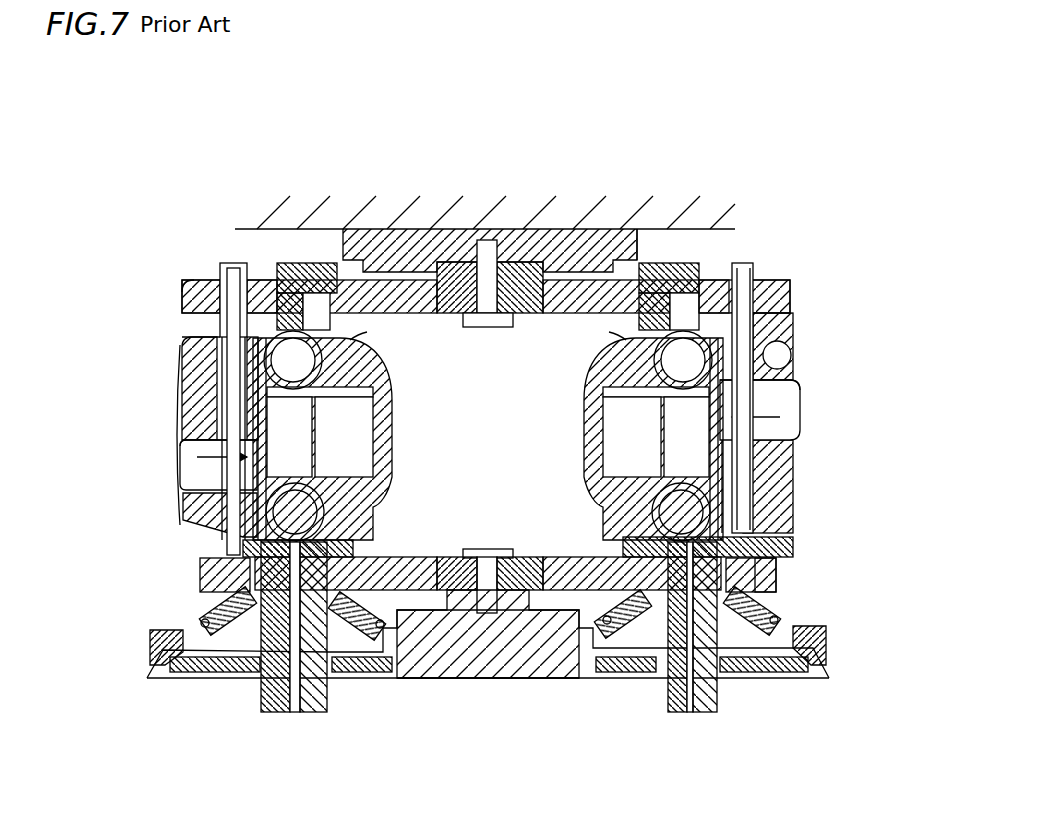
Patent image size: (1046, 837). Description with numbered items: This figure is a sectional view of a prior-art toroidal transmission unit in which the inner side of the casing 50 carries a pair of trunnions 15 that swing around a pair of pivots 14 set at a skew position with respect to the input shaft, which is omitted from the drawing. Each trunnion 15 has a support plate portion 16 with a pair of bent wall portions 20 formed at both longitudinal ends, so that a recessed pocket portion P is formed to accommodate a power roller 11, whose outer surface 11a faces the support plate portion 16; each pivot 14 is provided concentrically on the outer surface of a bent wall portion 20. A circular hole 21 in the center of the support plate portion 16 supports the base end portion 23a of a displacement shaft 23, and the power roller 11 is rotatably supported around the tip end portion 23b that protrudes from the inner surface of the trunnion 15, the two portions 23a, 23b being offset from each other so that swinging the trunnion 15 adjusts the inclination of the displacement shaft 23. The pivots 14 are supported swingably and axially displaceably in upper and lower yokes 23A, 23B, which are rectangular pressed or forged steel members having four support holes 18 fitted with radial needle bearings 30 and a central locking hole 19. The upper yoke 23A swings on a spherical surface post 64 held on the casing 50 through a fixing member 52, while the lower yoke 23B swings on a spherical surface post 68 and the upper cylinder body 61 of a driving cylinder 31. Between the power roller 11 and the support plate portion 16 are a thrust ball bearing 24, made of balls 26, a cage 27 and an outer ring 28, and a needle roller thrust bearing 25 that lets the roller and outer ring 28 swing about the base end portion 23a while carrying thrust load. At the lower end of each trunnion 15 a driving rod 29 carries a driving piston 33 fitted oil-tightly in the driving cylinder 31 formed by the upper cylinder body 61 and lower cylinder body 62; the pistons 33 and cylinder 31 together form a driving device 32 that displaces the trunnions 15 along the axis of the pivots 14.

The power roller 11 is at (366, 377).
The rotor top surface 11a is at (372, 354).
The pivot 14 is at (222, 262).
The trunnion 15 is at (200, 388).
The support plate portion 16 is at (212, 372).
The support hole 18 is at (327, 313).
The locking hole 19 is at (510, 232).
The bent wall portion 20 is at (307, 262).
The circular hole 21 is at (188, 443).
The displacement shaft 23 is at (185, 452).
The base end portion 23a is at (205, 478).
The tip end portion 23b is at (380, 410).
The yoke 23A is at (193, 283).
The yoke 23B is at (778, 578).
The thrust ball bearing 24 is at (180, 300).
The needle roller thrust bearing 25 is at (218, 525).
The ball 26 is at (228, 352).
The cage 27 is at (284, 262).
The outer ring 28 is at (208, 335).
The driving rod 29 is at (280, 710).
The radial needle bearing 30 is at (207, 270).
The driving cylinder 31 is at (514, 704).
The driving device 32 is at (340, 697).
The driving piston 33 is at (200, 680).
The casing 50 is at (632, 225).
The fixing member 52 is at (562, 330).
The upper cylinder body 61 is at (488, 688).
The lower cylinder body 62 is at (488, 736).
The spherical surface post 64 is at (460, 250).
The spherical surface post 68 is at (535, 557).
The pocket portion P is at (488, 332).